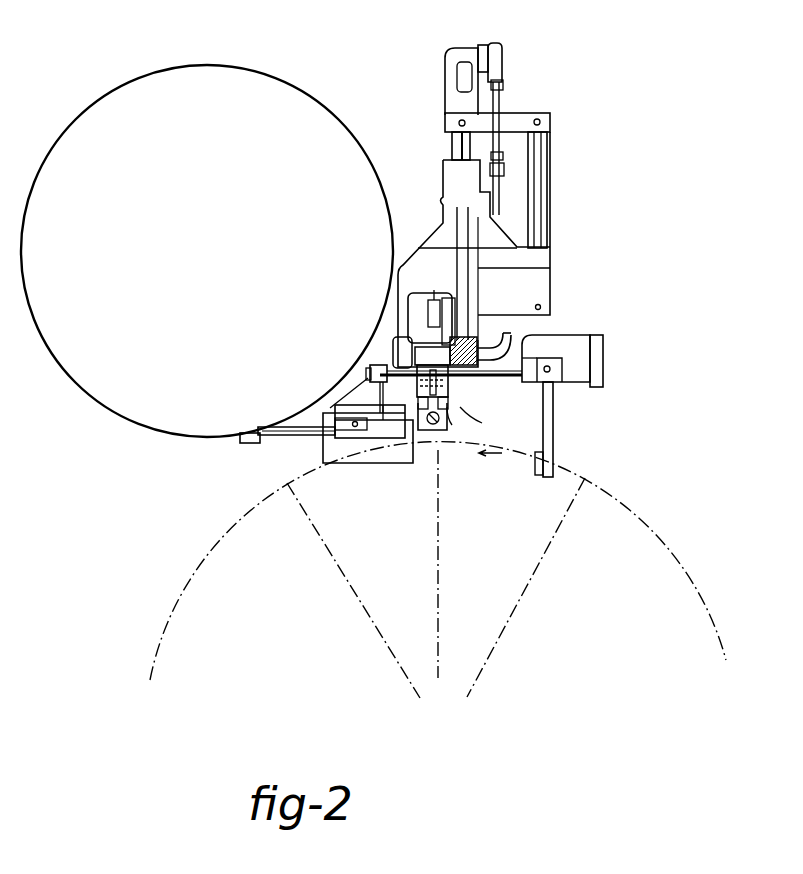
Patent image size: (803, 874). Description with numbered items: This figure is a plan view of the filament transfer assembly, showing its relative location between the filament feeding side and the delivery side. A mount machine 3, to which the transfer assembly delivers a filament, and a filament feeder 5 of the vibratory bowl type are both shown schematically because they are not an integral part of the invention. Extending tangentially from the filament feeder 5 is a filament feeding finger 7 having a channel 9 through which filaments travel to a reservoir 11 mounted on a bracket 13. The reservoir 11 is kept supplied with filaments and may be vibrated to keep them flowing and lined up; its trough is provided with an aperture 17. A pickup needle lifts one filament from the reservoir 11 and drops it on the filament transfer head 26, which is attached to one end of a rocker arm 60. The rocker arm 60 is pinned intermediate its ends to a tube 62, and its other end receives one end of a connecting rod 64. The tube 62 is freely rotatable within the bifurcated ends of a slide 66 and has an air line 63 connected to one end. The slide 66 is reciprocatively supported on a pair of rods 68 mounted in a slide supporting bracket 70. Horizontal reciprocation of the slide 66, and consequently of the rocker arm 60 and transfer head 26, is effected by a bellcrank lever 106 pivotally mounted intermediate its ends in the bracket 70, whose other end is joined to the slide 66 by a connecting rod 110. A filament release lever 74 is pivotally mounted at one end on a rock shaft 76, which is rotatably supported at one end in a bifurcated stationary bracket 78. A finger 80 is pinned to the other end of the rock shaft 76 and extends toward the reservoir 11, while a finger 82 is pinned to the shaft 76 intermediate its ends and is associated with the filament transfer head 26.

The mount machine 3 is at (205, 557).
The filament feeder 5 is at (108, 407).
The filament feeding finger 7 is at (303, 436).
The channel 9 is at (290, 430).
The reservoir 11 is at (357, 438).
The bracket 13 is at (350, 463).
The aperture 17 is at (383, 416).
The filament transfer head 26 is at (465, 406).
The rocker arm 60 is at (445, 333).
The tube 62 is at (485, 358).
The air line 63 is at (499, 345).
The connecting rod 64 is at (425, 308).
The slide 66 is at (417, 265).
The rods 68 is at (462, 143).
The slide supporting bracket 70 is at (518, 148).
The filament release lever 74 is at (553, 413).
The rock shaft 76 is at (512, 378).
The stationary bracket 78 is at (603, 360).
The finger 80 is at (382, 394).
The finger 82 is at (449, 388).
The bellcrank lever 106 is at (497, 44).
The connecting rod 110 is at (499, 110).